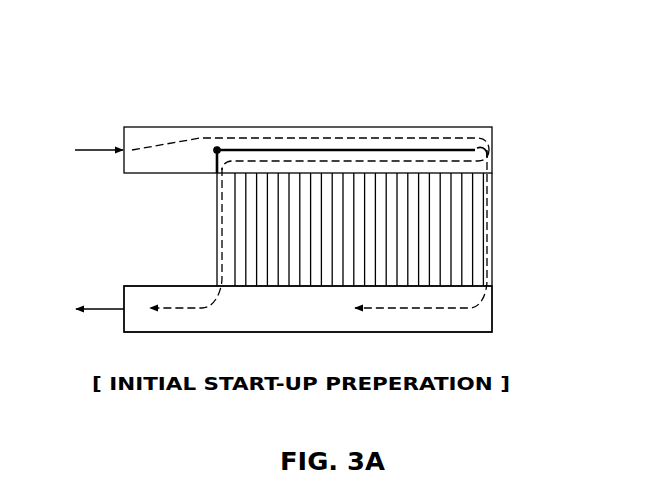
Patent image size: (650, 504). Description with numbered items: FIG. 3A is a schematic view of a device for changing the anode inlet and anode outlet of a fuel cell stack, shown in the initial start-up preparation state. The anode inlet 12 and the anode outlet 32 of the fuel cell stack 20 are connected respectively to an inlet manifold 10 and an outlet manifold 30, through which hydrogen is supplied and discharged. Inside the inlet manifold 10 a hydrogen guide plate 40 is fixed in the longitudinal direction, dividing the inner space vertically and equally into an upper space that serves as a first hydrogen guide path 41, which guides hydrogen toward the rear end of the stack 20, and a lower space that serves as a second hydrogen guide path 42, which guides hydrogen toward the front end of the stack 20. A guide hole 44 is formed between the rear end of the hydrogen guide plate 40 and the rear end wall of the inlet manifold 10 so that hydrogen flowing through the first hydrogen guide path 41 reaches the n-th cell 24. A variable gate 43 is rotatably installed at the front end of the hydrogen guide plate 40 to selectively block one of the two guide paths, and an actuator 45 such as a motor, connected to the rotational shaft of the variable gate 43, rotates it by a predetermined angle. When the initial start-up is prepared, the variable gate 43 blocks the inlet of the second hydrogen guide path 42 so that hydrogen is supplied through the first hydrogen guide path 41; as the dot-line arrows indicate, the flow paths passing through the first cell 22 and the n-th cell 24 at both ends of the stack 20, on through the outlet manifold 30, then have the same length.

The inlet manifold 10 is at (285, 124).
The anode inlet 12 is at (124, 136).
The fuel cell stack 20 is at (495, 258).
The first cell 22 is at (217, 247).
The n-th cell 24 is at (492, 218).
The outlet manifold 30 is at (495, 318).
The anode outlet 32 is at (124, 300).
The hydrogen guide plate 40 is at (383, 150).
The first hydrogen guide path 41 is at (450, 134).
The second hydrogen guide path 42 is at (352, 156).
The variable gate 43 is at (215, 162).
The guide hole 44 is at (483, 140).
The actuator 45 is at (217, 150).